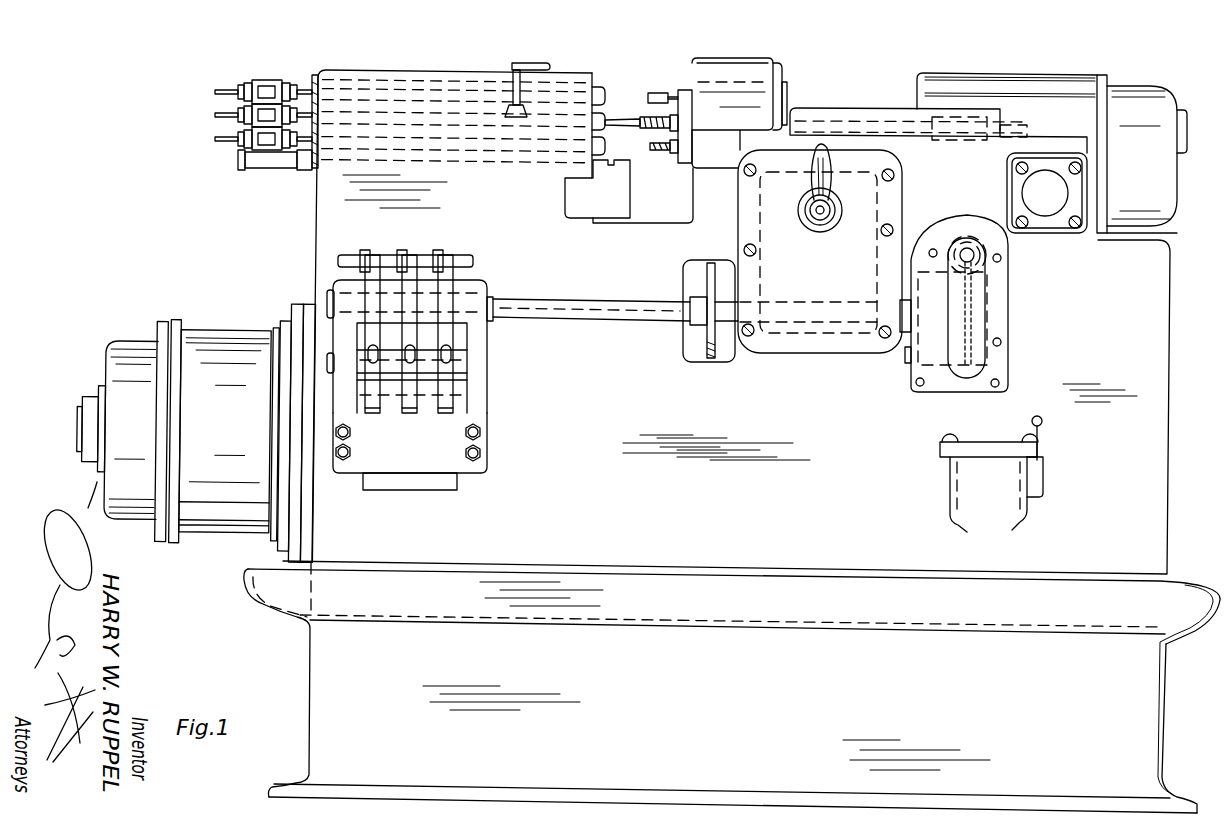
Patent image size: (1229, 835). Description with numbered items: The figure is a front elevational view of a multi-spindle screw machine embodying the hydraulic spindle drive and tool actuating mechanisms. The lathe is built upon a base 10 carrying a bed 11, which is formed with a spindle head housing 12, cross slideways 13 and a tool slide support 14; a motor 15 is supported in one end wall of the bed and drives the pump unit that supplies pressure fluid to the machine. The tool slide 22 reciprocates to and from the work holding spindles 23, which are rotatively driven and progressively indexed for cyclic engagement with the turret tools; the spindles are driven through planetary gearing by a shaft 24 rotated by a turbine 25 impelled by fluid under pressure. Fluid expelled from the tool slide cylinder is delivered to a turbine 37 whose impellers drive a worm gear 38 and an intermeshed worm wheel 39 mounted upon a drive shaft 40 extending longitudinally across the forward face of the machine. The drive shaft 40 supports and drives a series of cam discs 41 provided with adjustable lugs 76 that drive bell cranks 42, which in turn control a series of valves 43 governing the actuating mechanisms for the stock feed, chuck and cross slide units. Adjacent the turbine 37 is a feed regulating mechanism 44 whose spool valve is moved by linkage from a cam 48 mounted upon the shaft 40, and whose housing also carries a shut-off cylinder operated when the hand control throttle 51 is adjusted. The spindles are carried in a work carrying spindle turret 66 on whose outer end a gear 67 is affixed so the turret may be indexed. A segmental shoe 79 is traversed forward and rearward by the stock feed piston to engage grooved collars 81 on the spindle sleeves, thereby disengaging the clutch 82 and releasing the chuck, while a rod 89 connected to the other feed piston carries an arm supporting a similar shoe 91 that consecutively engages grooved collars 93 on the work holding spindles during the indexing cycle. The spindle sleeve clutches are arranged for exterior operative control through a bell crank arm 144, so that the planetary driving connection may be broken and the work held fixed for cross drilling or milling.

The base 10 is at (1120, 732).
The bed 11 is at (1127, 426).
The spindle head housing 12 is at (413, 75).
The cross slideways 13 is at (605, 203).
The tool slide support 14 is at (815, 113).
The motor 15 is at (197, 338).
The tool slide 22 is at (730, 60).
The work holding spindles 23 is at (598, 88).
The shaft 24 is at (622, 117).
The turbine 25 is at (1130, 187).
The turbine 37 is at (975, 285).
The worm gear 38 is at (979, 240).
The worm wheel 39 is at (987, 356).
The drive shaft 40 is at (597, 308).
The cam discs 41 is at (446, 268).
The bell cranks 42 is at (455, 385).
The valves 43 is at (440, 460).
The feed regulating mechanism 44 is at (870, 210).
The cam 48 is at (713, 348).
The hand control throttle 51 is at (830, 161).
The spindle turret 66 is at (567, 86).
The gear 67 is at (318, 75).
The adjustable lugs 76 is at (440, 255).
The segmental shoe 79 is at (286, 170).
The grooved collars 81 is at (270, 170).
The clutch 82 is at (265, 82).
The rod 89 is at (265, 162).
The shoe 91 is at (240, 153).
The grooved collars 93 is at (247, 107).
The bell crank arm 144 is at (537, 63).